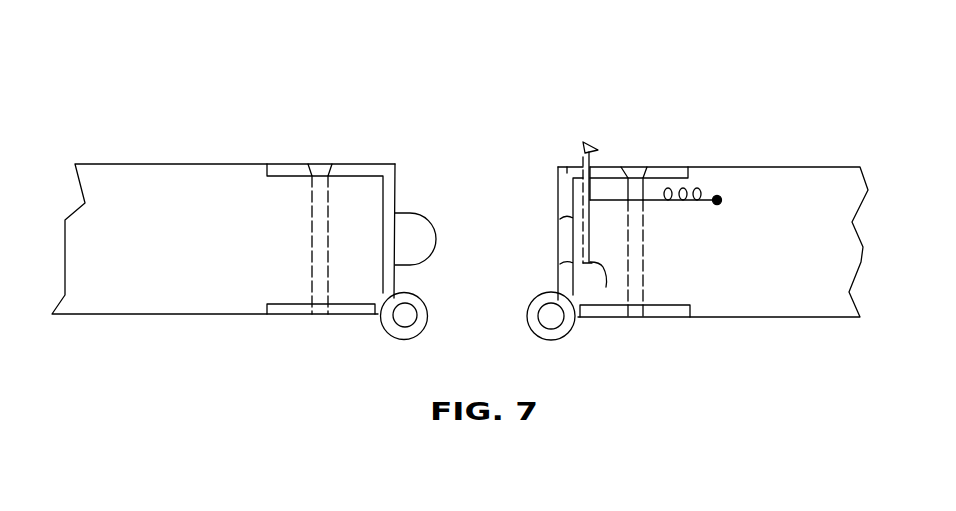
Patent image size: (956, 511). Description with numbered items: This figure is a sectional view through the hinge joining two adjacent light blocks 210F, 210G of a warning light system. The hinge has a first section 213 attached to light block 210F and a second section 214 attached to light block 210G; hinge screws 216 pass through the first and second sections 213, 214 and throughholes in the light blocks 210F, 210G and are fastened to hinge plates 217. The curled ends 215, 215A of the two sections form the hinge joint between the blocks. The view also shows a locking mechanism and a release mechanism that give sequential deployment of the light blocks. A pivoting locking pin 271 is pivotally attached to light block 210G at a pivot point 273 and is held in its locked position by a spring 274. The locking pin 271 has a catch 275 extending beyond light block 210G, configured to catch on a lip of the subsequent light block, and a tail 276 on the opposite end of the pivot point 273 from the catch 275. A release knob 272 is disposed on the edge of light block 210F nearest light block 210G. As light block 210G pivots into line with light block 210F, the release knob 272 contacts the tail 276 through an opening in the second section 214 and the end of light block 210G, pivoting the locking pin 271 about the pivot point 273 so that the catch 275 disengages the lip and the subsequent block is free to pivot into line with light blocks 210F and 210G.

The light block 210F is at (168, 205).
The light block 210G is at (845, 207).
The first section 213 is at (362, 163).
The second section 214 is at (567, 167).
The curled loop 215 is at (383, 336).
The curled loop 215A is at (533, 300).
The hinge screws 216 is at (312, 245).
The hinge plates 217 is at (282, 303).
The locking pin 271 is at (588, 147).
The release knob 272 is at (431, 211).
The pivot point 273 is at (592, 215).
The spring 274 is at (699, 189).
The catch 275 is at (602, 162).
The tail 276 is at (606, 287).